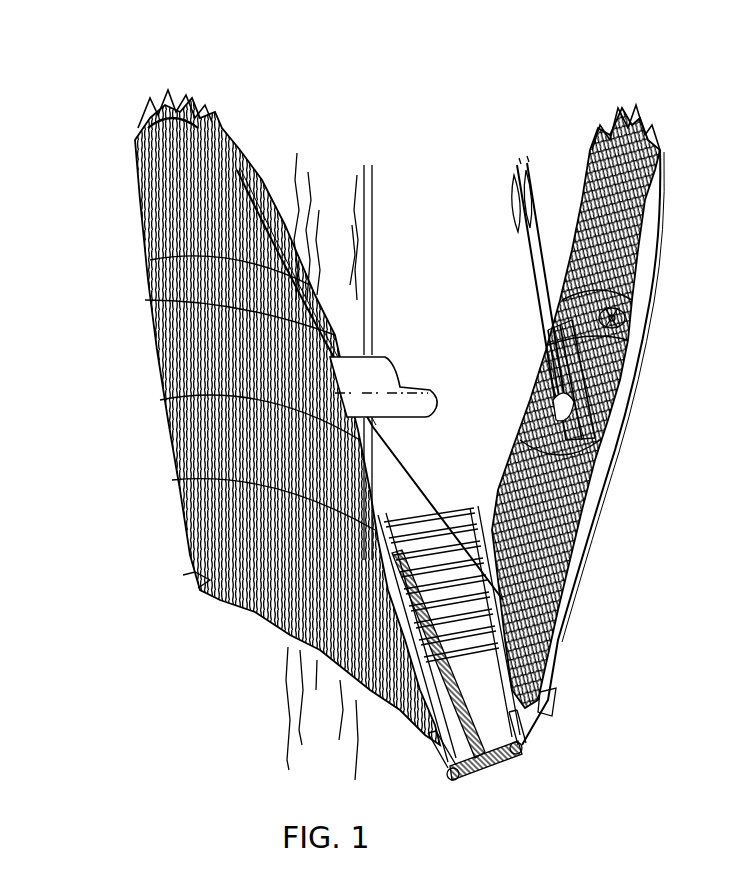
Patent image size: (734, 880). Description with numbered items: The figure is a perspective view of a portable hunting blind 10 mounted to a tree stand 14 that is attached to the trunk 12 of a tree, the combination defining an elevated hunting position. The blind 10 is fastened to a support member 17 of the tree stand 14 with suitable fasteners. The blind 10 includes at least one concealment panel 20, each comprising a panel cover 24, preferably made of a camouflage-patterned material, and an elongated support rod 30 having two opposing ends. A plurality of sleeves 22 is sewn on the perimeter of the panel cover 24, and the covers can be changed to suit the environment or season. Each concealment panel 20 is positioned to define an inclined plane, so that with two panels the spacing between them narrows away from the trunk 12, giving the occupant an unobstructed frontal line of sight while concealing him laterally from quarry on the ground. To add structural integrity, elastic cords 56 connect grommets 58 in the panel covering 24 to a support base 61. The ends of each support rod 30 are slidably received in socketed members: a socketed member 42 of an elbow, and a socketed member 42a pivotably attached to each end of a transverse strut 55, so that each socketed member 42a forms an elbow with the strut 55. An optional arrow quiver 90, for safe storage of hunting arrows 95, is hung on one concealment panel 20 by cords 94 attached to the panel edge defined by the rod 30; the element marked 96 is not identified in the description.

The portable hunting blind 10 is at (508, 76).
The trunk 12 is at (374, 196).
The tree stand 14 is at (362, 372).
The support member 17 is at (405, 520).
The concealment panel 20 is at (152, 563).
The sleeves 22 is at (648, 167).
The panel cover 24 is at (160, 125).
The elongated support rod 30 is at (247, 187).
The socketed member 42 is at (182, 575).
The socketed member 42a is at (447, 780).
The transverse strut 55 is at (485, 776).
The elastic cords 56 is at (430, 738).
The grommets 58 is at (548, 700).
The support base 61 is at (443, 686).
The arrow quiver 90 is at (530, 357).
The cords 94 is at (627, 313).
The hunting arrows 95 is at (537, 242).
The axle 96 is at (634, 322).